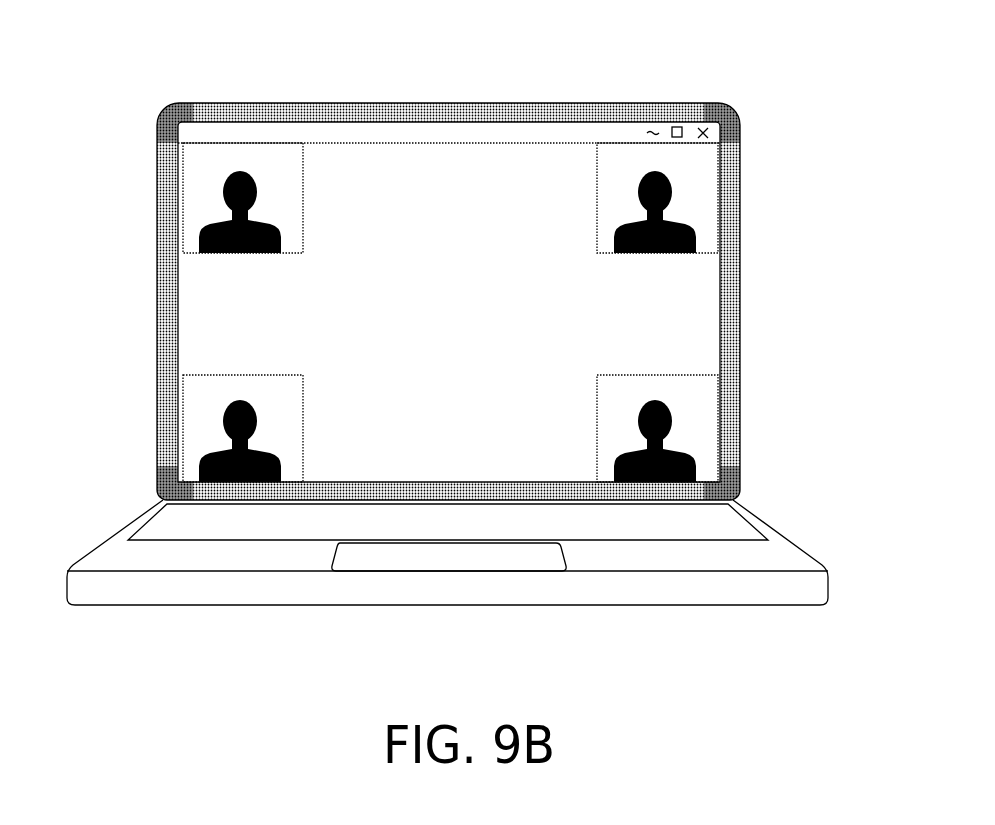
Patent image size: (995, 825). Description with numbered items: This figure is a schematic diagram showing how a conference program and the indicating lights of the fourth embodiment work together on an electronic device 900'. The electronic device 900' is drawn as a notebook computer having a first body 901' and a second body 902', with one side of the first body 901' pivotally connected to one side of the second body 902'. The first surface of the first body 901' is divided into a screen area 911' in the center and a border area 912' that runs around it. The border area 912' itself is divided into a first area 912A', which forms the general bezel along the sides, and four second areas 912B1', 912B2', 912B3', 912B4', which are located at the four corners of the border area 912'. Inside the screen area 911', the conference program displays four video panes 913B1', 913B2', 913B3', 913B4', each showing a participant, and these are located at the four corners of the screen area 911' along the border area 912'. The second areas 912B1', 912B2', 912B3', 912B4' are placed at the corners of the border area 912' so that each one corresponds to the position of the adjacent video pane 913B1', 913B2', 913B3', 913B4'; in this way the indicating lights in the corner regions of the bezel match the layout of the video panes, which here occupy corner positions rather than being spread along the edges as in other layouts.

The electronic device 900' is at (462, 362).
The first body 901' is at (444, 271).
The second body 902' is at (443, 527).
The screen area 911' is at (499, 302).
The border area 912' is at (489, 301).
The first area 912A' is at (116, 305).
The second area 912B1' is at (117, 117).
The second area 912B2' is at (769, 139).
The second area 912B3' is at (776, 483).
The second area 912B4' is at (116, 457).
The video pane 913B1' is at (243, 147).
The video pane 913B2' is at (657, 146).
The video pane 913B3' is at (723, 428).
The video pane 913B4' is at (171, 413).